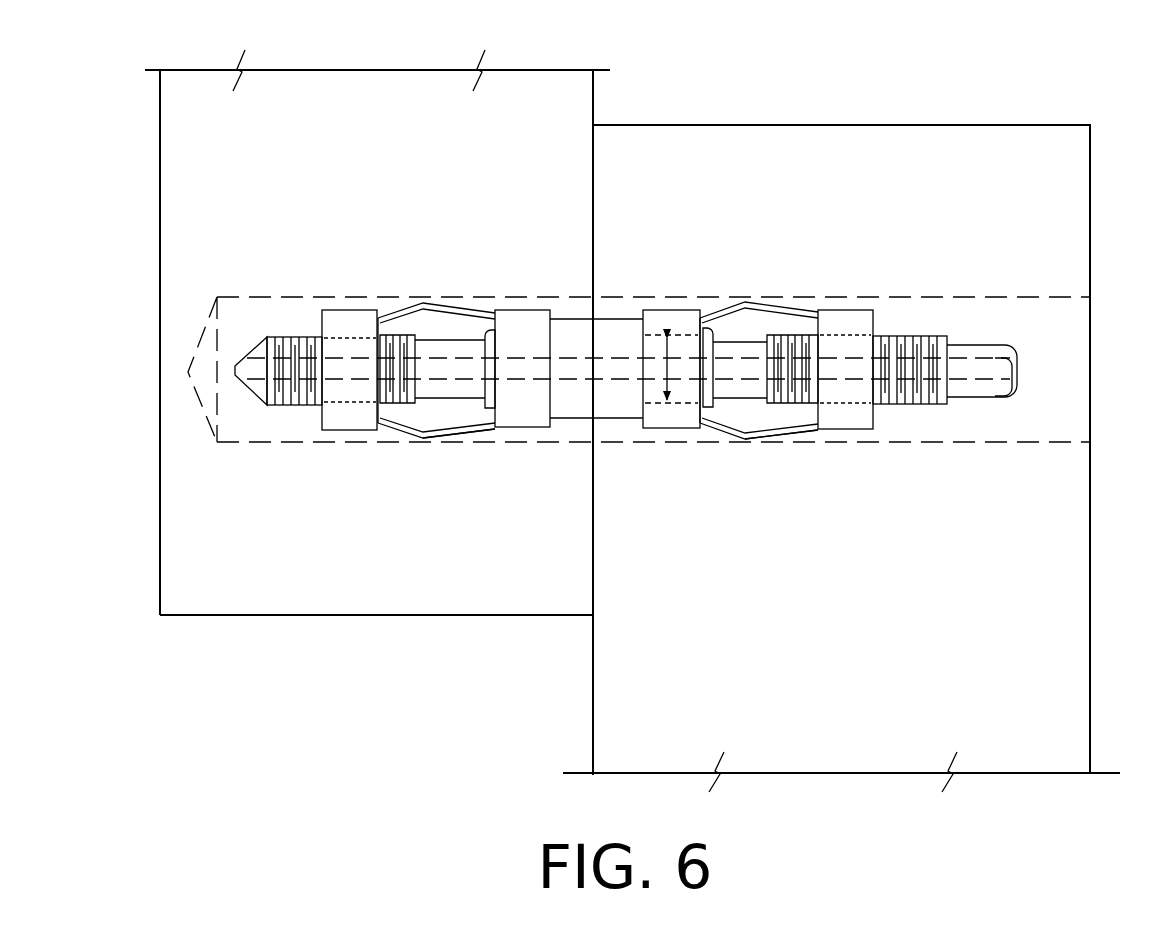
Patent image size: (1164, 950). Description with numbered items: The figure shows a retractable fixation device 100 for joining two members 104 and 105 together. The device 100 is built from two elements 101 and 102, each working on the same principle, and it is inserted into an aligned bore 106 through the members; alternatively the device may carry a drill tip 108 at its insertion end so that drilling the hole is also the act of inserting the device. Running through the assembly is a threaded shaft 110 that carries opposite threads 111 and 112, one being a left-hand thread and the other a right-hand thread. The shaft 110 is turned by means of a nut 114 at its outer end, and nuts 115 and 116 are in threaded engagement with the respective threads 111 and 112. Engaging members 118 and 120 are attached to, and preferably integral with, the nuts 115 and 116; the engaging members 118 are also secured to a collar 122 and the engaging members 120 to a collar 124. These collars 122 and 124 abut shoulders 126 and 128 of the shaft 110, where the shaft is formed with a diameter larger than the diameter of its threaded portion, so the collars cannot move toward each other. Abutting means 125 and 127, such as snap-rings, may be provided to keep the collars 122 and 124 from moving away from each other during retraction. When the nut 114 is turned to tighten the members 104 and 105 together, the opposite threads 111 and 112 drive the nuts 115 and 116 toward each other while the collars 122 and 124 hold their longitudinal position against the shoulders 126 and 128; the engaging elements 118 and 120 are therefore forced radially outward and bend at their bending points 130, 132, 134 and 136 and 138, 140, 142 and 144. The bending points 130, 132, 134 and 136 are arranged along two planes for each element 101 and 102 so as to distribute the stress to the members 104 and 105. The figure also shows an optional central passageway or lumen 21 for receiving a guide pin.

The central passageway or lumen 21 is at (997, 360).
The retractable fixation device 100 is at (730, 213).
The element 101 is at (420, 200).
The element 102 is at (773, 517).
The member 104 is at (528, 98).
The member 105 is at (1068, 177).
The aligned bore 106 is at (1070, 290).
The drill tip 108 is at (245, 393).
The threaded shaft 110 is at (612, 340).
The thread 111 is at (300, 397).
The thread 112 is at (928, 392).
The nut 114 is at (1012, 373).
The nut 115 is at (333, 317).
The nut 116 is at (857, 322).
The engaging member 118 is at (423, 300).
The engaging member 120 is at (790, 305).
The collar 122 is at (527, 403).
The collar 124 is at (663, 317).
The abutting means 125 is at (485, 402).
The shoulder 126 is at (553, 370).
The abutting means 127 is at (720, 387).
The shoulder 128 is at (642, 397).
The bending point 130 is at (742, 292).
The bending point 132 is at (787, 430).
The bending point 134 is at (453, 438).
The bending point 136 is at (448, 366).
The bending point 138 is at (820, 312).
The bending point 140 is at (701, 312).
The bending point 142 is at (503, 308).
The bending point 144 is at (378, 320).